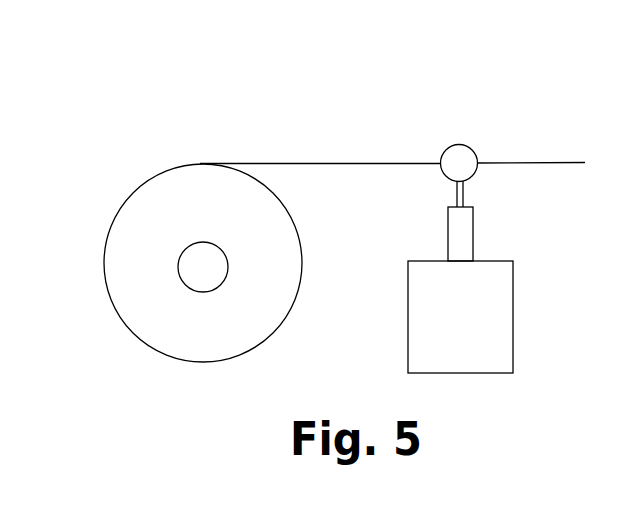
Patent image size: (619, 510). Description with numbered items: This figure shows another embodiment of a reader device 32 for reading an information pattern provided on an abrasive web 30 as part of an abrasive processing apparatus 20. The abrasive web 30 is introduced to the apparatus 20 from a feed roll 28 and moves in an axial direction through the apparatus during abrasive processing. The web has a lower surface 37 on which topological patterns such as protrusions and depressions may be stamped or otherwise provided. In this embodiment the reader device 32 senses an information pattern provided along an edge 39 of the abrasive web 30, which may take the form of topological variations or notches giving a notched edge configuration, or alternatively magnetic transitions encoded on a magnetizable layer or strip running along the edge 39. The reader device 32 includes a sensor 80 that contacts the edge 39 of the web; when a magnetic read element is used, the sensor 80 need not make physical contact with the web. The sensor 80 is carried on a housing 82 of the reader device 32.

The abrasive processing apparatus 20 is at (170, 72).
The feed roll 28 is at (243, 354).
The abrasive web 30 is at (366, 160).
The lower surface 37 is at (280, 163).
The edge 39 is at (551, 160).
The sensor 80 is at (475, 173).
The reader device 32 is at (394, 234).
The detector housing 82 is at (472, 374).